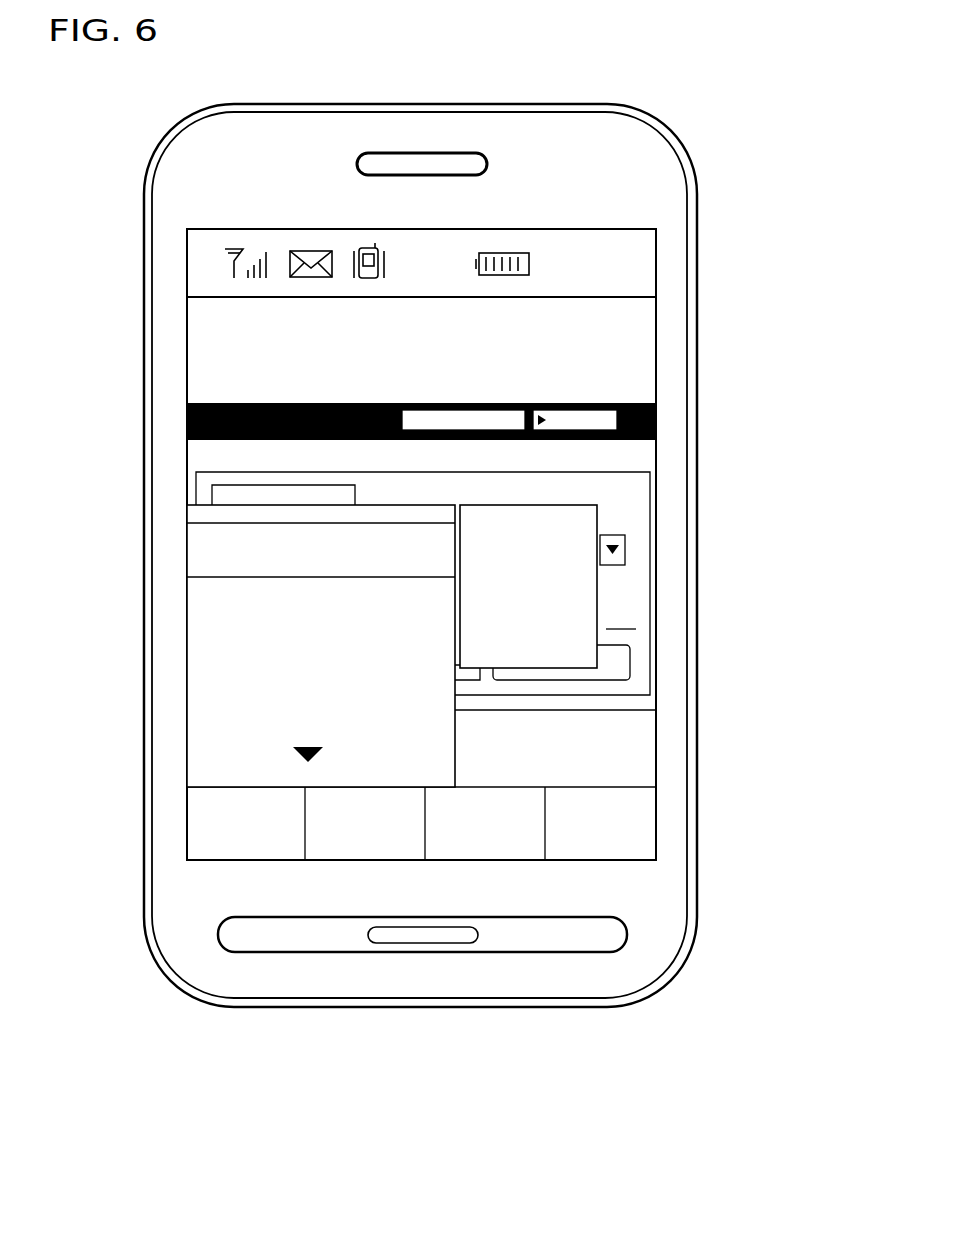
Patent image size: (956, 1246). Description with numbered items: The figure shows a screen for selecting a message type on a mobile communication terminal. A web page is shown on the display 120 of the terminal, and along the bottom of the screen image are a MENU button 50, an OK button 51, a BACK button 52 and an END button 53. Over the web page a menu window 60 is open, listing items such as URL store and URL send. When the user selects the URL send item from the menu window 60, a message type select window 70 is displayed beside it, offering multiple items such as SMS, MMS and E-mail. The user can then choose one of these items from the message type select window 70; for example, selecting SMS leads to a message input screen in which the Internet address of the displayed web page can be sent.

The display 120 is at (657, 358).
The menu window 60 is at (226, 503).
The message type select window 70 is at (600, 587).
The MENU button 50 is at (246, 845).
The OK button 51 is at (350, 845).
The BACK button 52 is at (485, 845).
The END button 53 is at (600, 845).